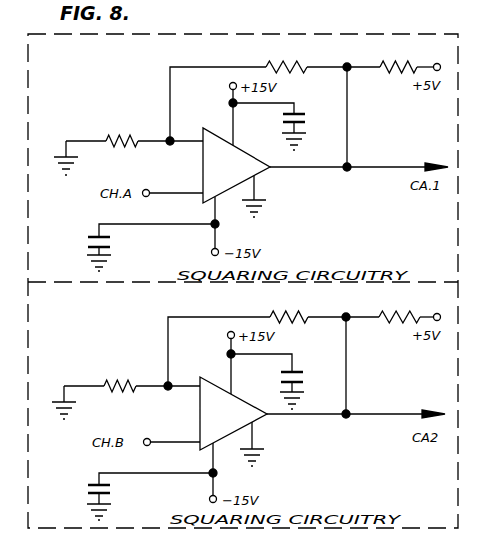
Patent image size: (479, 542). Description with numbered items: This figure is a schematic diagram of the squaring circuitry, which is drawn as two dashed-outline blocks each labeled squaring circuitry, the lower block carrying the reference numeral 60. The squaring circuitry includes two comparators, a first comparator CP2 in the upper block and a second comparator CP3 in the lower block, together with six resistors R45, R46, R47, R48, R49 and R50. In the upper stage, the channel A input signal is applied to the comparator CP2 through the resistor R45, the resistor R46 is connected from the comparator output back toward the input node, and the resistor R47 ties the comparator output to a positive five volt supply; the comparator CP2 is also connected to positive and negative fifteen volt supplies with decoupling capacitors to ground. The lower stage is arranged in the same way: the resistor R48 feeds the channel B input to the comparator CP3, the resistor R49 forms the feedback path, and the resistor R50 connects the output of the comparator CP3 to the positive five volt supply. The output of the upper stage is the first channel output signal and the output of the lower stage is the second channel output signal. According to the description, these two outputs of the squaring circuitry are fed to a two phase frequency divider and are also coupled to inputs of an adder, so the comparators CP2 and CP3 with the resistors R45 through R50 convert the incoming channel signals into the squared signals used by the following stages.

The squaring circuitry 60 is at (74, 528).
The resistor R45 is at (134, 132).
The resistor R46 is at (322, 59).
The resistor R47 is at (409, 59).
The comparator CP2 is at (236, 165).
The resistor R48 is at (132, 377).
The resistor R49 is at (323, 309).
The resistor R50 is at (409, 309).
The comparator CP3 is at (233, 413).